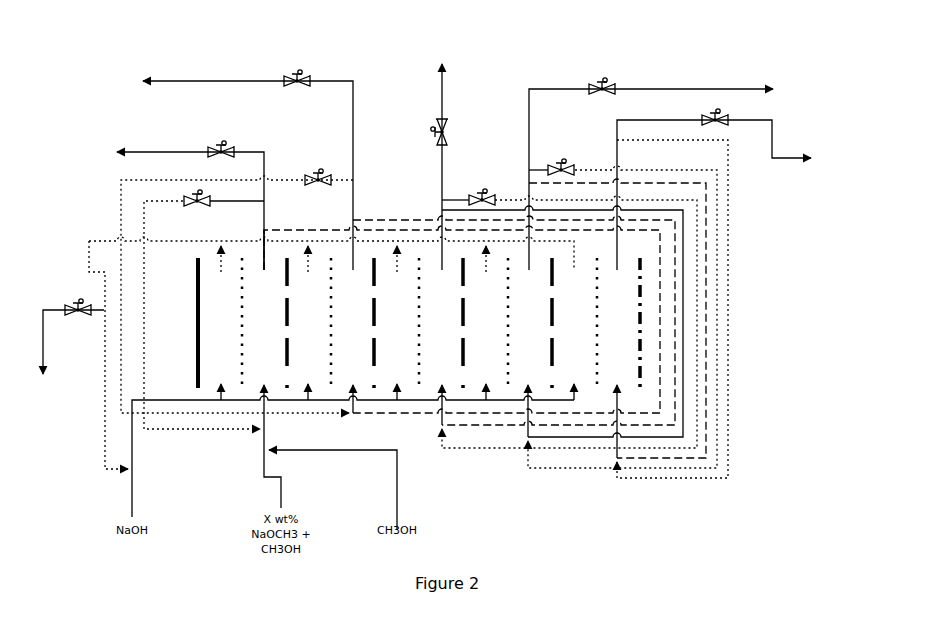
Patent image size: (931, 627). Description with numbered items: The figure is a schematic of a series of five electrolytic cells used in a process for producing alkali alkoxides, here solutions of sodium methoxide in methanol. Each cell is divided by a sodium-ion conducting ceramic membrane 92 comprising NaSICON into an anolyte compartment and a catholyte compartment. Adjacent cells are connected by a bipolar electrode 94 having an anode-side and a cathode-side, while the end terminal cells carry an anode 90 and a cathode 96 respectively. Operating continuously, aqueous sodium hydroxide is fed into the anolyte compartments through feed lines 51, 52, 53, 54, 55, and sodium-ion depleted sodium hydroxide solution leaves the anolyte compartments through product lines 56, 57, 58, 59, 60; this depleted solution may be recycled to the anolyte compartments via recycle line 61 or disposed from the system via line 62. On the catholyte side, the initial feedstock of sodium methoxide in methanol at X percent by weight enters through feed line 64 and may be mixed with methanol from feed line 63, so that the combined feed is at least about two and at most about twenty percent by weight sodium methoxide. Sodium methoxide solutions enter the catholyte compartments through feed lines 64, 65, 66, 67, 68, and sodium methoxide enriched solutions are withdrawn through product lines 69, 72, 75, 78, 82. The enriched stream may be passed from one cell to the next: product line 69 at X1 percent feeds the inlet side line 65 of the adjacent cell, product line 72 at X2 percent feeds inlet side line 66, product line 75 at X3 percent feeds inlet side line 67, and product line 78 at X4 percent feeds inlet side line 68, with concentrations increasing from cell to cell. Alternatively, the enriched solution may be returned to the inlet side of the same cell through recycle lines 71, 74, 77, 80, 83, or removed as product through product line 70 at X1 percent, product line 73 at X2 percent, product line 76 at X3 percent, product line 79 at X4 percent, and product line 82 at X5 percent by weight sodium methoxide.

The feed line 51 is at (210, 392).
The feed line 52 is at (298, 392).
The feed line 53 is at (386, 392).
The feed line 54 is at (475, 392).
The feed line 55 is at (563, 392).
The product line 56 is at (209, 259).
The product line 57 is at (296, 317).
The product line 58 is at (383, 317).
The product line 59 is at (472, 317).
The product line 60 is at (561, 317).
The recycle line 61 is at (104, 355).
The line 62 is at (61, 359).
The feed line 63 is at (333, 490).
The feed line 64 is at (261, 446).
The feed line 65 is at (343, 398).
The feed line 66 is at (431, 404).
The feed line 67 is at (519, 410).
The feed line 68 is at (606, 420).
The product line 69 is at (253, 250).
The product line 70 is at (172, 203).
The recycle line 71 is at (204, 309).
The product line 72 is at (341, 245).
The product line 73 is at (229, 140).
The recycle line 74 is at (225, 291).
The product line 75 is at (430, 245).
The product line 76 is at (442, 123).
The recycle line 77 is at (557, 318).
The product line 78 is at (517, 245).
The product line 79 is at (684, 143).
The recycle line 80 is at (611, 314).
The product line 82 is at (737, 189).
The recycle line 83 is at (672, 318).
The anode 90 is at (185, 323).
The sodium-ion conducting ceramic membrane 92 is at (286, 323).
The bipolar electrode 94 is at (552, 323).
The cathode 96 is at (625, 325).